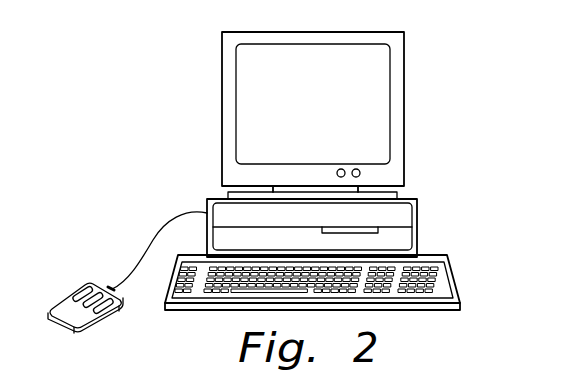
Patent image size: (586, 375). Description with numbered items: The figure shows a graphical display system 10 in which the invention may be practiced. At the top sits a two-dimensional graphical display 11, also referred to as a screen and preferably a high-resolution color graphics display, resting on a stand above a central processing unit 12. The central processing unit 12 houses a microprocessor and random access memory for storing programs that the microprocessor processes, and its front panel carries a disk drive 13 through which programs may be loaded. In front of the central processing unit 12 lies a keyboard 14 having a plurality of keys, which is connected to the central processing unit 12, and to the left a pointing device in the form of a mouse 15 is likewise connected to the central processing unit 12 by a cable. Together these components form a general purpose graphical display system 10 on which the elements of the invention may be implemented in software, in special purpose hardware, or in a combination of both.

The graphical display system 10 is at (152, 137).
The two-dimensional graphical display 11 is at (326, 115).
The central processing unit 12 is at (400, 213).
The disk drive 13 is at (376, 233).
The keyboard 14 is at (455, 282).
The mouse 15 is at (63, 303).